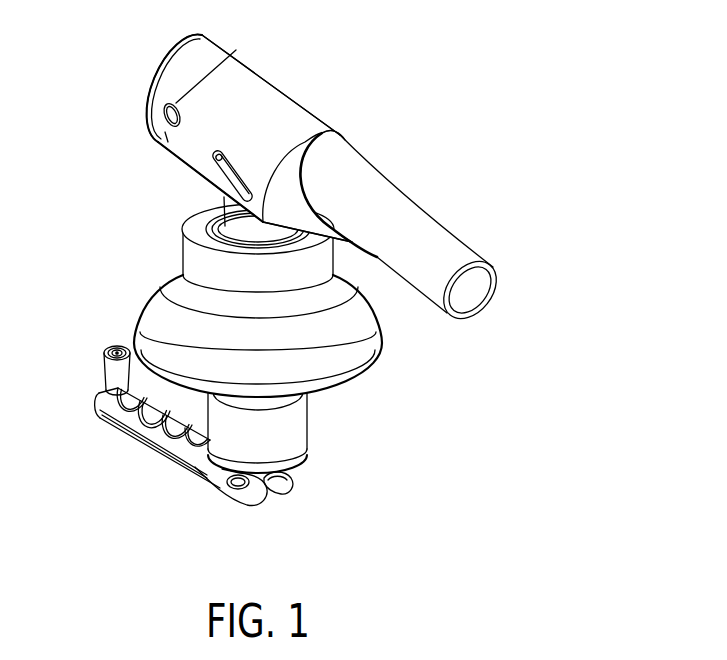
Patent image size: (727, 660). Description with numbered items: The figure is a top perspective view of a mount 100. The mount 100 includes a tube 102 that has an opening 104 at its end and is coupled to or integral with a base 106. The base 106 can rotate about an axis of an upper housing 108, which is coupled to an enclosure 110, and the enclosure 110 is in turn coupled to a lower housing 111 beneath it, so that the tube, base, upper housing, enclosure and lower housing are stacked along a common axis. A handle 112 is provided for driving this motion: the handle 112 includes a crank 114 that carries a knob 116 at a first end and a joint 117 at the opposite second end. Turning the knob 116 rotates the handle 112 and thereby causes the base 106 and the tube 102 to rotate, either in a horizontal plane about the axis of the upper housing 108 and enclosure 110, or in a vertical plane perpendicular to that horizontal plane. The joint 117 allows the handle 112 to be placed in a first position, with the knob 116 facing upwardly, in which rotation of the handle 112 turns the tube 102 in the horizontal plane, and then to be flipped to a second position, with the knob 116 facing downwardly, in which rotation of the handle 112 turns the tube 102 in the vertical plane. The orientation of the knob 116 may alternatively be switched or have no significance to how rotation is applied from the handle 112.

The mount 100 is at (446, 72).
The tube 102 is at (455, 237).
The opening 104 is at (492, 288).
The base 106 is at (270, 78).
The upper housing 108 is at (232, 224).
The enclosure 110 is at (372, 355).
The lower housing 111 is at (311, 420).
The handle 112 is at (155, 455).
The crank 114 is at (117, 427).
The knob 116 is at (100, 353).
The joint 117 is at (262, 506).